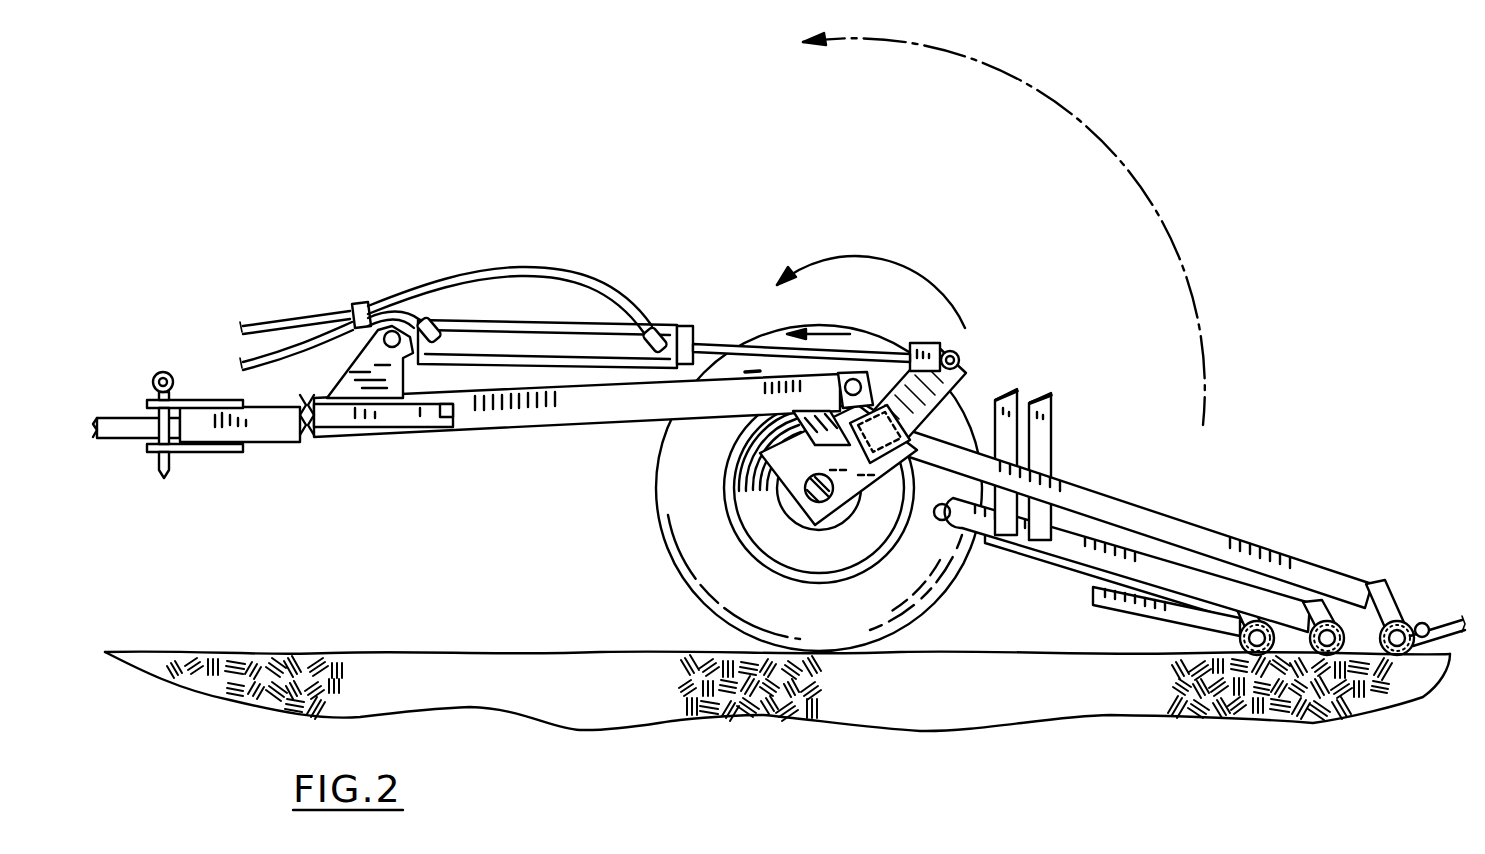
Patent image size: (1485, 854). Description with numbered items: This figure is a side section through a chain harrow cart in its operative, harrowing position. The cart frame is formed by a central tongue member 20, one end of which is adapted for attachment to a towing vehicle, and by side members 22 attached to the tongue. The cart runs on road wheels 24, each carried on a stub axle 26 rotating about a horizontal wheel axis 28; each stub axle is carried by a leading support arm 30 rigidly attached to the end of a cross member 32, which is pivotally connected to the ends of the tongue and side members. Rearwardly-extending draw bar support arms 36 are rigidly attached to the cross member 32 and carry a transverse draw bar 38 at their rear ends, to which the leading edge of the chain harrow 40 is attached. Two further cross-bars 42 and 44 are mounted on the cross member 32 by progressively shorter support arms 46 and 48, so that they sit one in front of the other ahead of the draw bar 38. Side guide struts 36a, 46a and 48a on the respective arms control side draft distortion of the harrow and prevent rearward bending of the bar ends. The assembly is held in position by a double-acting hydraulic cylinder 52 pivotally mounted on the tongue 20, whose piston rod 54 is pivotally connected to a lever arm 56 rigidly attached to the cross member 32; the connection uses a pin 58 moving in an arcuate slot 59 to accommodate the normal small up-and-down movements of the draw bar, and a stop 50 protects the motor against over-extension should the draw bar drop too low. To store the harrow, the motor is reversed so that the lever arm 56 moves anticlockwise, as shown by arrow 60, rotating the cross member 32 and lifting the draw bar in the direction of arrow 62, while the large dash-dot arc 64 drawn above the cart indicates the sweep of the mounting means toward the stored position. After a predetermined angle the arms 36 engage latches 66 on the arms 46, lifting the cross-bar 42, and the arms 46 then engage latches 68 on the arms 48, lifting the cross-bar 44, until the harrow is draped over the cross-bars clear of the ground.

The central tongue member 20 is at (522, 413).
The side members 22 is at (388, 428).
The road wheels 24 is at (656, 488).
The stub axle 26 is at (752, 460).
The wheel axes 28 is at (768, 488).
The leading support arm 30 is at (752, 508).
The cross member 32 is at (838, 478).
The draw bar support arms 36 is at (1077, 486).
The side guide struts 36a is at (1381, 584).
The draw bar 38 is at (1378, 656).
The chain harrow 40 is at (1437, 618).
The cross-bar 42 is at (1345, 656).
The cross-bar 44 is at (1272, 656).
The support arms 46 is at (1073, 545).
The side guide struts 46a is at (1313, 603).
The support arms 48 is at (1047, 567).
The side guide struts 48a is at (1248, 606).
The stop 50 is at (772, 392).
The double-acting hydraulic cylinder 52 is at (508, 322).
The piston rod 54 is at (716, 345).
The lever arm 56 is at (975, 358).
The pin 58 is at (930, 345).
The arcuate slot 59 is at (962, 352).
The arrow 60 is at (822, 332).
The arrow 62 is at (864, 262).
The direction of frame rotation 64 is at (982, 65).
The latches 66 is at (1003, 393).
The latches 68 is at (1034, 401).